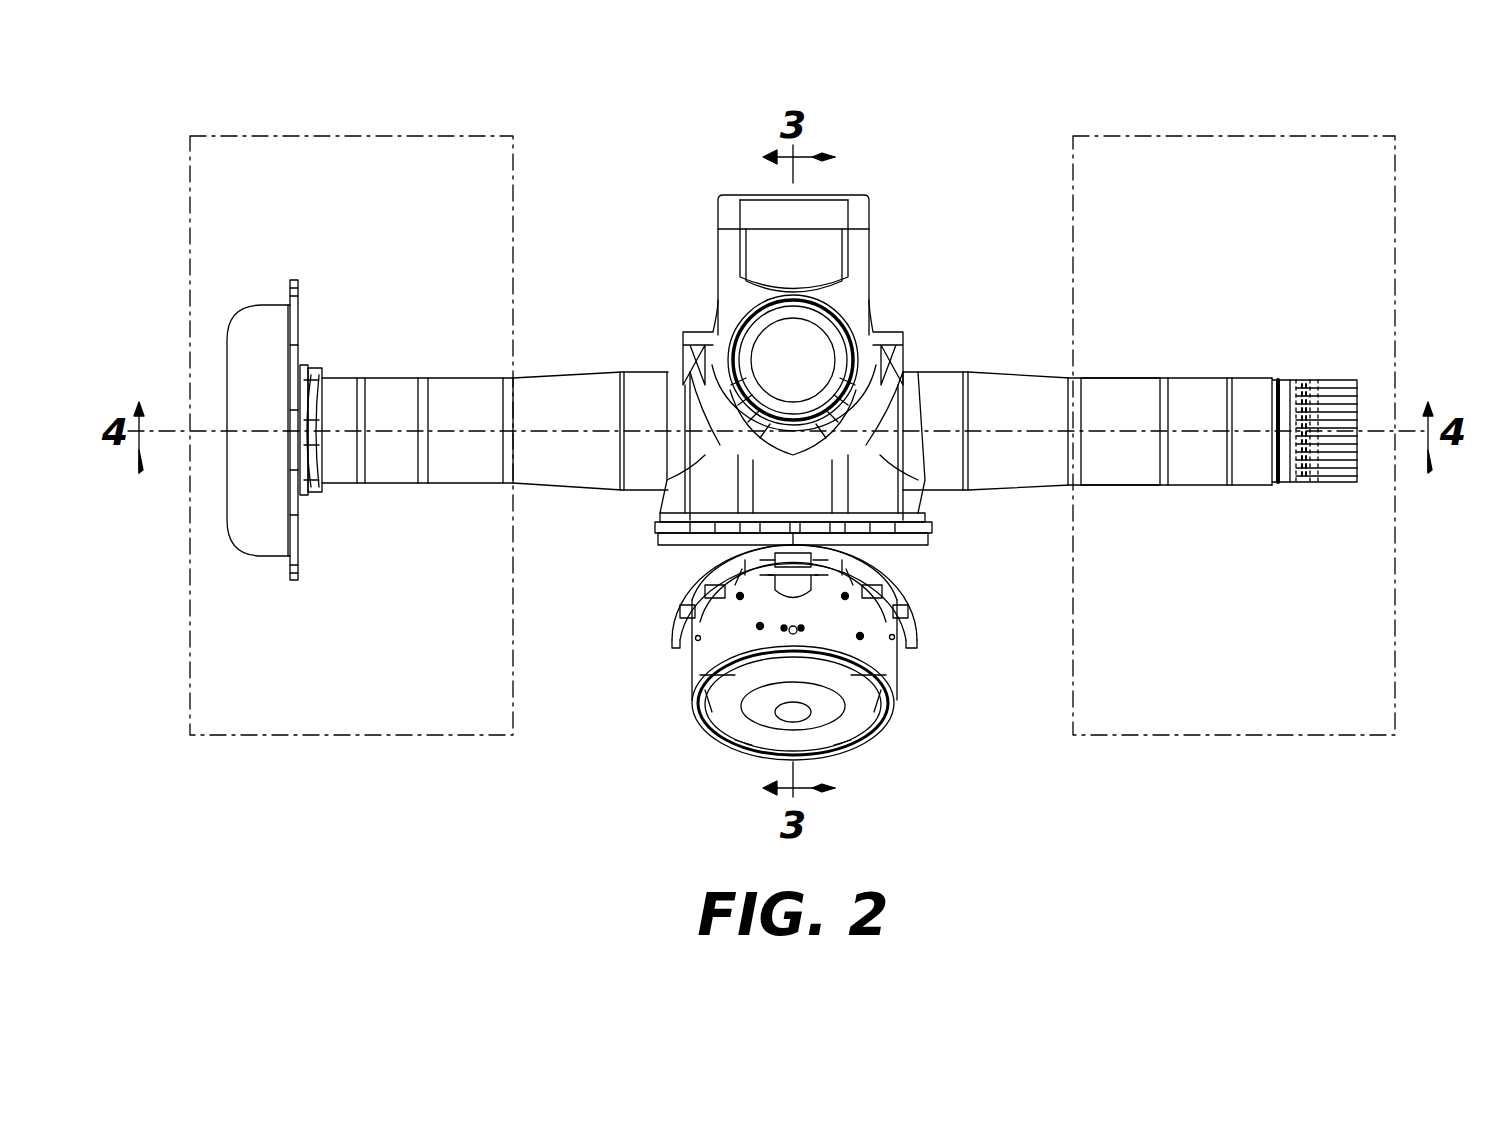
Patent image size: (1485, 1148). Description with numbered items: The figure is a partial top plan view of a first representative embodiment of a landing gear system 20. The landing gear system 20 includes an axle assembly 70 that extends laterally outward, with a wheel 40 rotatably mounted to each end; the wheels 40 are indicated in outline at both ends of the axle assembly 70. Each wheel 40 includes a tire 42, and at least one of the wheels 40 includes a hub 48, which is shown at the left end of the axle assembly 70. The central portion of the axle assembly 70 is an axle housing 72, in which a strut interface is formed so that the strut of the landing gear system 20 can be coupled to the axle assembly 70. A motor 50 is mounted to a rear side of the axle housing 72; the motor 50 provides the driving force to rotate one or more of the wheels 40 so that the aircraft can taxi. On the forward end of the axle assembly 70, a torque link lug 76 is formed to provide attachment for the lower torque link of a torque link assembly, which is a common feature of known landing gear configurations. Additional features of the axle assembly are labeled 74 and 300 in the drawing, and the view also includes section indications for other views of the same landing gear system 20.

The landing gear system 20 is at (640, 180).
The wheel 40 is at (215, 126).
The tire 42 is at (191, 213).
The hub 48 is at (227, 364).
The motor 50 is at (897, 660).
The axle assembly 70 is at (647, 355).
The axle housing 72 is at (996, 372).
The bearing boss 74 is at (868, 312).
The torque link lug 76 is at (873, 195).
The axle shaft portion 300 is at (1013, 433).